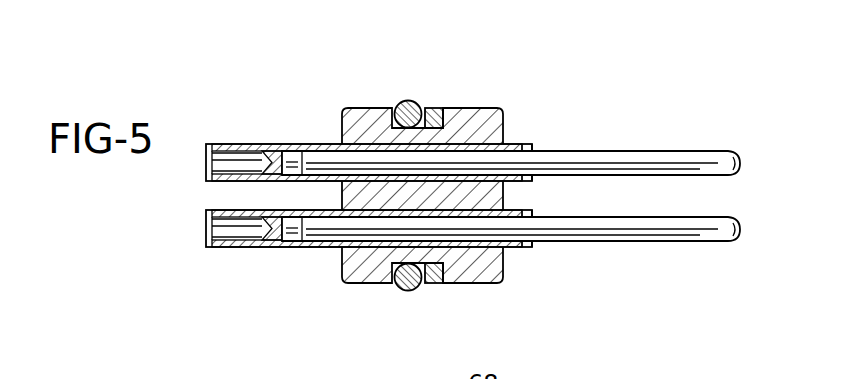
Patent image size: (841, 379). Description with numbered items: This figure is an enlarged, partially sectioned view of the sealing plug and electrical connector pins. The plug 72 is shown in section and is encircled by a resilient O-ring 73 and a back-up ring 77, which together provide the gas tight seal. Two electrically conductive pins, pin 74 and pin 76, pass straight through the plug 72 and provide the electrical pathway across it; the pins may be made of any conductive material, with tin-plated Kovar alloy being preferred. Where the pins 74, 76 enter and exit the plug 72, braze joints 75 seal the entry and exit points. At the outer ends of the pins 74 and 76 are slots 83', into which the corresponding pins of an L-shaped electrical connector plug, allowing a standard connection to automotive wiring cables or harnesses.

The plug 72 is at (364, 112).
The resilient O-ring 73 is at (410, 101).
The back-up ring 77 is at (432, 108).
The braze joints 75 is at (532, 150).
The pin 74 is at (650, 158).
The pin 76 is at (592, 241).
The slots 83' is at (322, 199).